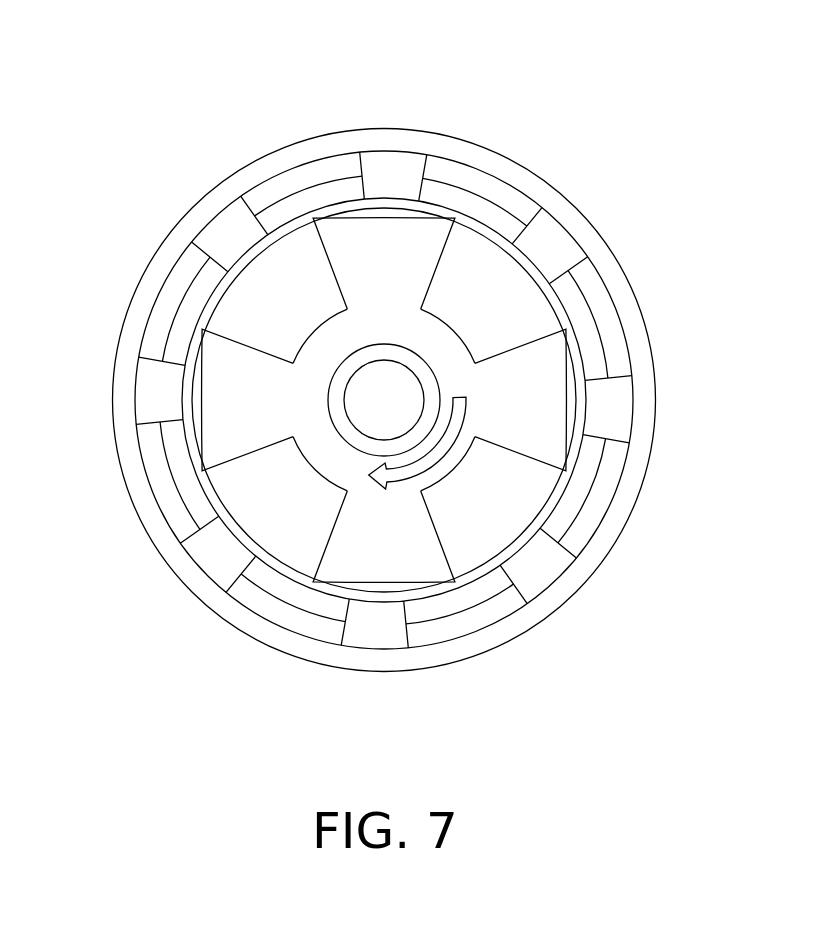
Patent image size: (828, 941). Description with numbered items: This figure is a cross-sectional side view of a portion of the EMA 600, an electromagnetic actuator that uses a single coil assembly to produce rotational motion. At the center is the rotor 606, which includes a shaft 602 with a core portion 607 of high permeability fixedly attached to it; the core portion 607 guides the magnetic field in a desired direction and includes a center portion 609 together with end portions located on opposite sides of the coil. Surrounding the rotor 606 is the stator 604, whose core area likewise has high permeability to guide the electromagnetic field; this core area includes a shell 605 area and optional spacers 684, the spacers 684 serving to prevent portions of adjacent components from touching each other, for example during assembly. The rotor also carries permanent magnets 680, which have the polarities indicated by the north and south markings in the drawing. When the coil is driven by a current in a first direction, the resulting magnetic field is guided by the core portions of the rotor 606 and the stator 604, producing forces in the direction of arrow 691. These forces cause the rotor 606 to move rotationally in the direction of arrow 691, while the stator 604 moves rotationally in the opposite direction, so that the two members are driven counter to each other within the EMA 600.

The EMA 600 is at (50, 80).
The shaft 602 is at (393, 380).
The stator 604 is at (122, 472).
The shell 605 is at (252, 165).
The rotor 606 is at (403, 390).
The core portion 607 is at (348, 432).
The center portion 609 is at (362, 442).
The magnets 680 is at (185, 275).
The spacers 684 is at (393, 172).
The arrow 691 is at (457, 420).